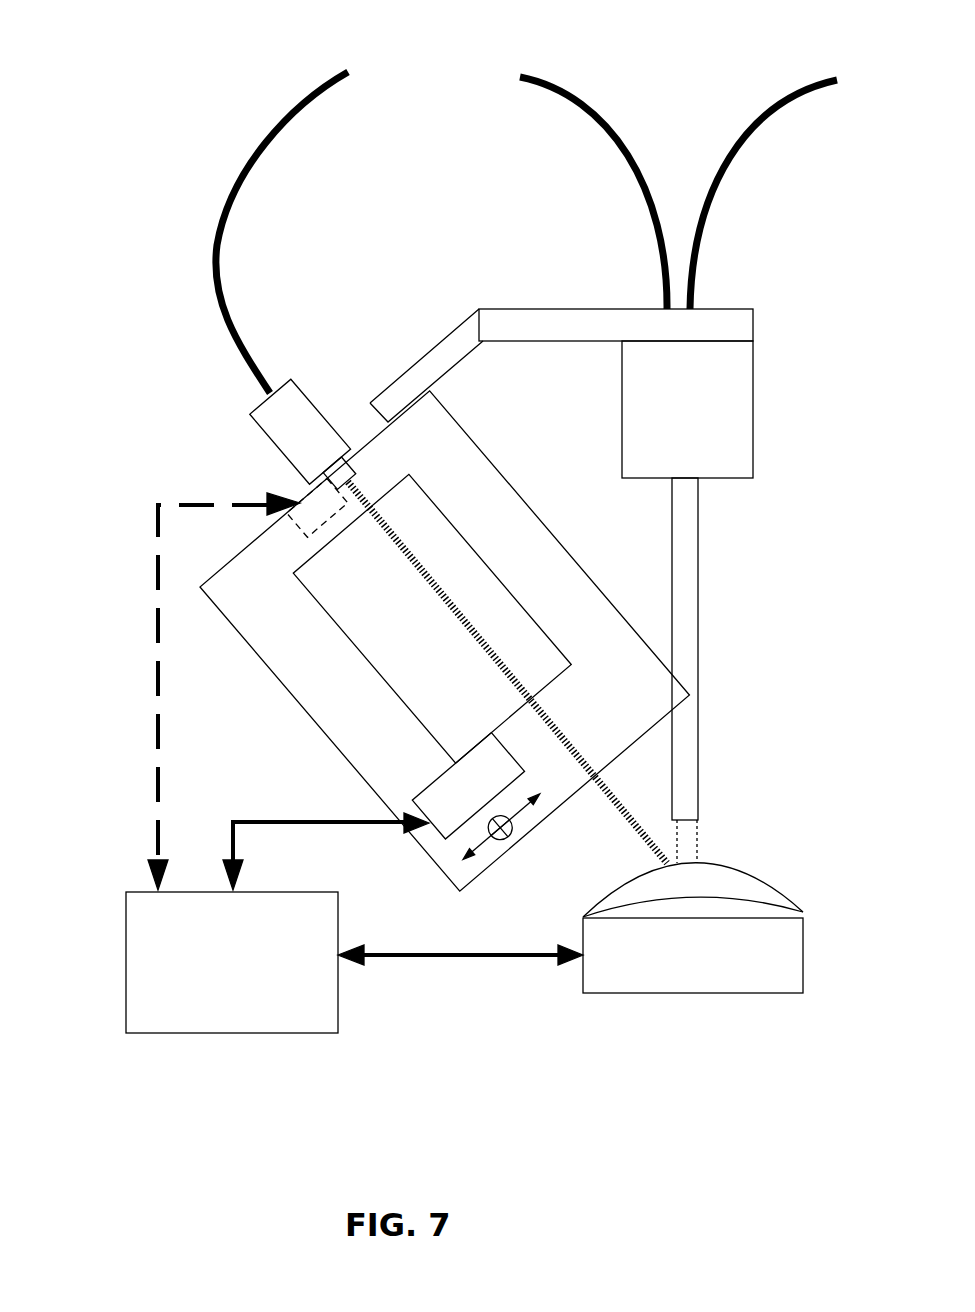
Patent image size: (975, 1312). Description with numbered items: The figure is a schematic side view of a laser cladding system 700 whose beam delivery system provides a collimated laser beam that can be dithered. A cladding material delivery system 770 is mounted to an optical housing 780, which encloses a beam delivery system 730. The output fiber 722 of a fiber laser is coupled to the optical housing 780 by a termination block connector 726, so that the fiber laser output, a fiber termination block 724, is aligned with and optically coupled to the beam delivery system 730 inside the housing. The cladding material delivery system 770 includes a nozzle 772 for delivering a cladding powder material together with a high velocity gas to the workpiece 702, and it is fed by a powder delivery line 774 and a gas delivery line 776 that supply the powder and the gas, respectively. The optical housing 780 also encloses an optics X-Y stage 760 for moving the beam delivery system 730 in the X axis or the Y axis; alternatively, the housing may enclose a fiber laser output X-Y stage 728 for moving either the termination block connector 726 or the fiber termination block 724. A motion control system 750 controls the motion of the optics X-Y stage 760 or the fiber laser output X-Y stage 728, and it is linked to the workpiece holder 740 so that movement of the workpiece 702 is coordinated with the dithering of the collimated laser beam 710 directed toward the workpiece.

The laser cladding system 700 is at (160, 106).
The workpiece 702 is at (595, 897).
The collimated laser beam 710 is at (626, 822).
The output fiber 722 is at (222, 312).
The fiber termination block 724 is at (343, 477).
The termination block connector 726 is at (277, 445).
The fiber laser output X-Y stage 728 is at (288, 516).
The beam delivery system 730 is at (327, 613).
The workpiece holder 740 is at (690, 994).
The motion control system 750 is at (220, 1034).
The optics X-Y stage 760 is at (428, 796).
The cladding material delivery system 770 is at (806, 487).
The nozzle 772 is at (697, 618).
The powder delivery line 774 is at (660, 284).
The gas delivery line 776 is at (708, 218).
The optical housing 780 is at (282, 687).